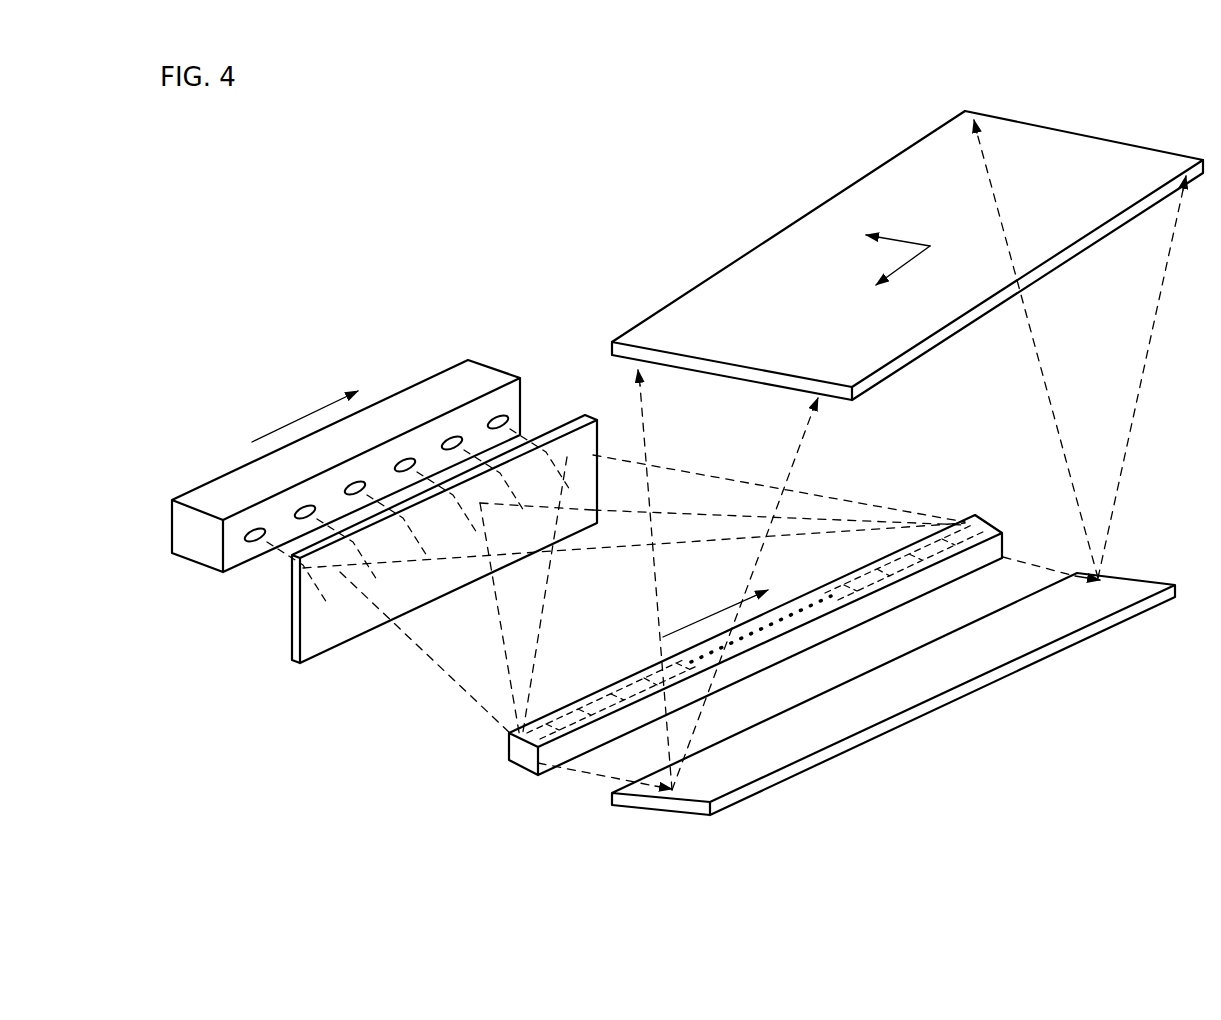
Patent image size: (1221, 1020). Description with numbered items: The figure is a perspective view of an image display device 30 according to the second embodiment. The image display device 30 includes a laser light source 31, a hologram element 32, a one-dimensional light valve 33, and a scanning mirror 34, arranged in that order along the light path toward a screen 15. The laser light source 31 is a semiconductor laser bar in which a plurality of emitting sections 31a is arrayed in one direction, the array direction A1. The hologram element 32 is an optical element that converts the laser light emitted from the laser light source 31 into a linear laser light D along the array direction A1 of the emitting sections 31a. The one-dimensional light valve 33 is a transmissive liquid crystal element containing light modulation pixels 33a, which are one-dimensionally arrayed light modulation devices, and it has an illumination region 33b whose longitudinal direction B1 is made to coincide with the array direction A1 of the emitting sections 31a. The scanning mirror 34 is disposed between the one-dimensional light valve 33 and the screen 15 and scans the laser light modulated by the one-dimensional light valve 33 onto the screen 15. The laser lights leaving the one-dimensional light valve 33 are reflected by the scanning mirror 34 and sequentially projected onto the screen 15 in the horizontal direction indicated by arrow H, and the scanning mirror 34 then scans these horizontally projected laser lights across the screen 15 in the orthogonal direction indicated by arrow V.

The screen 15 is at (1080, 128).
The image display device 30 is at (500, 168).
The laser light source 31 is at (454, 348).
The emitting sections 31a is at (497, 421).
The hologram element 32 is at (293, 664).
The one-dimensional light valve 33 is at (522, 774).
The light modulation pixels 33a is at (633, 673).
The illumination region 33b is at (980, 512).
The scanning mirror 34 is at (662, 816).
The array direction A1 is at (295, 418).
The longitudinal direction B1 is at (703, 620).
The linear laser light D is at (577, 697).
The arrow V is at (904, 240).
The arrow H is at (906, 268).